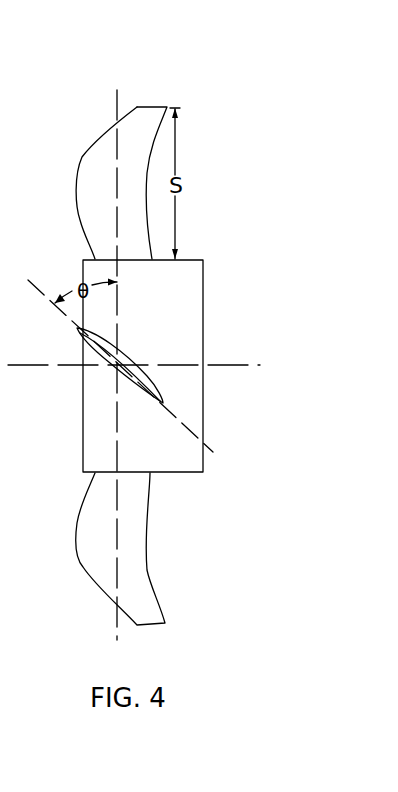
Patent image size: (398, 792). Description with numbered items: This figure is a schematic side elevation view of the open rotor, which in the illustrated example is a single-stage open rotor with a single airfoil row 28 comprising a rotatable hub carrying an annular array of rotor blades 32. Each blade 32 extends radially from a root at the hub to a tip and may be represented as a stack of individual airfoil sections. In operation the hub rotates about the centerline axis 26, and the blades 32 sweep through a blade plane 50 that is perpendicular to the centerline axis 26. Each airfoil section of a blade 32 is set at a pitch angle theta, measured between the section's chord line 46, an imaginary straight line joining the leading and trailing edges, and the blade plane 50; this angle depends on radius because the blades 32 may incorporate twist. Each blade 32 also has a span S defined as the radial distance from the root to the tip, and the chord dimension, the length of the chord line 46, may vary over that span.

The centerline axis 26 is at (225, 364).
The airfoil row 28 is at (166, 79).
The rotor blade 32 is at (75, 152).
The chord line 46 is at (86, 341).
The blade plane 50 is at (117, 106).